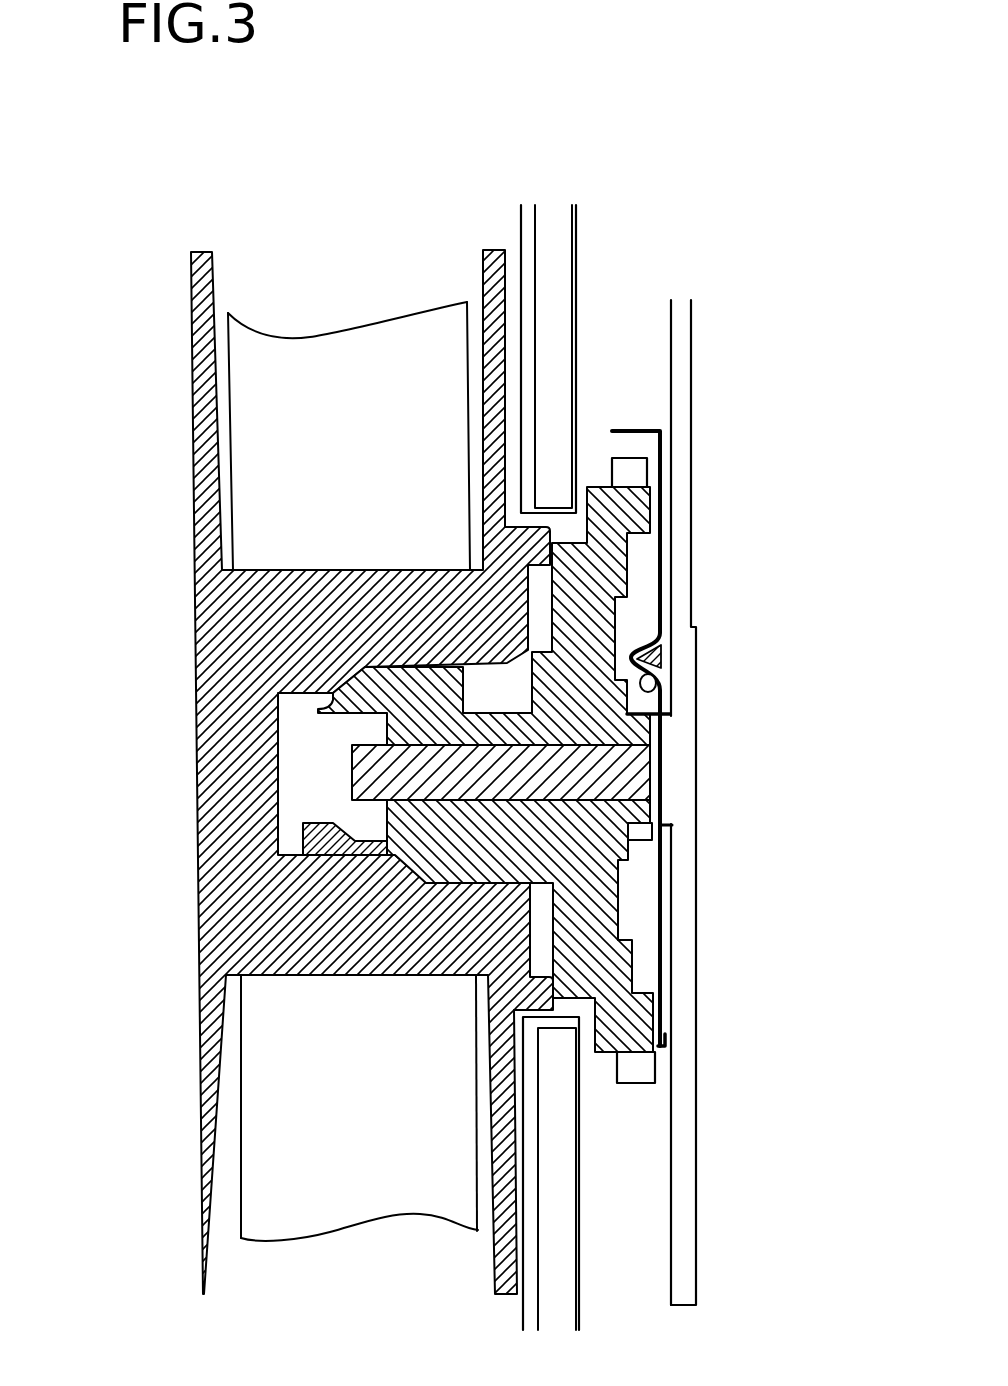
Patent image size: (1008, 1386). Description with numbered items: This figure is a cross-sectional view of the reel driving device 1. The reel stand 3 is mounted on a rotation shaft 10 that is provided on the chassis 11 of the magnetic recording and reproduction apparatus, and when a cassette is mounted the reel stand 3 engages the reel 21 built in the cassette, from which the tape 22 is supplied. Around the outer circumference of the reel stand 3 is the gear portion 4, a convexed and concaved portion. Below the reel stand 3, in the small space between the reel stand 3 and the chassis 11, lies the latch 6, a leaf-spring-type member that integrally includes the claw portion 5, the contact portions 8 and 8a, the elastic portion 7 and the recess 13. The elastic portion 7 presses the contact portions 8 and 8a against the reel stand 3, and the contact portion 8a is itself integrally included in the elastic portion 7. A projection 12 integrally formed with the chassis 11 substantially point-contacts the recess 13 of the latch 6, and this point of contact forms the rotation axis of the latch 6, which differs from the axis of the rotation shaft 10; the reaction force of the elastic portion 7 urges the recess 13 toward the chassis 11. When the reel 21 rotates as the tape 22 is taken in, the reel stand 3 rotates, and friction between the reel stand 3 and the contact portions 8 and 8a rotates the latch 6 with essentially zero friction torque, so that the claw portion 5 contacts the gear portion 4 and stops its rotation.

The reel driving device 1 is at (333, 158).
The reel stand 3 is at (305, 825).
The gear portion 4 is at (633, 473).
The claw portion 5 is at (635, 426).
The latch 6 is at (658, 553).
The elastic portion 7 is at (663, 922).
The contact portion 8 is at (652, 512).
The contact portion 8a is at (663, 1025).
The rotation shaft 10 is at (383, 782).
The chassis 11 is at (688, 1070).
The projection 12 is at (661, 653).
The recess 13 is at (652, 693).
The reel 21 is at (210, 604).
The tape 22 is at (310, 425).